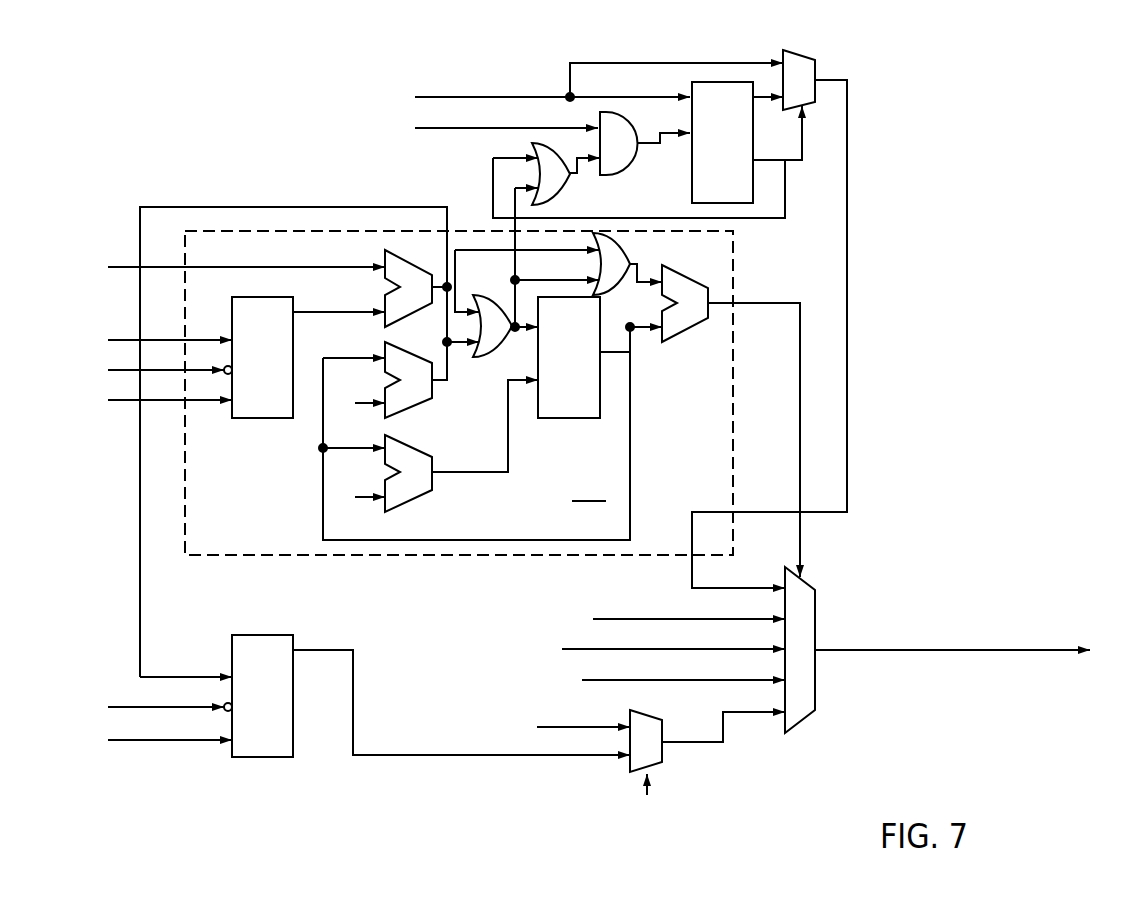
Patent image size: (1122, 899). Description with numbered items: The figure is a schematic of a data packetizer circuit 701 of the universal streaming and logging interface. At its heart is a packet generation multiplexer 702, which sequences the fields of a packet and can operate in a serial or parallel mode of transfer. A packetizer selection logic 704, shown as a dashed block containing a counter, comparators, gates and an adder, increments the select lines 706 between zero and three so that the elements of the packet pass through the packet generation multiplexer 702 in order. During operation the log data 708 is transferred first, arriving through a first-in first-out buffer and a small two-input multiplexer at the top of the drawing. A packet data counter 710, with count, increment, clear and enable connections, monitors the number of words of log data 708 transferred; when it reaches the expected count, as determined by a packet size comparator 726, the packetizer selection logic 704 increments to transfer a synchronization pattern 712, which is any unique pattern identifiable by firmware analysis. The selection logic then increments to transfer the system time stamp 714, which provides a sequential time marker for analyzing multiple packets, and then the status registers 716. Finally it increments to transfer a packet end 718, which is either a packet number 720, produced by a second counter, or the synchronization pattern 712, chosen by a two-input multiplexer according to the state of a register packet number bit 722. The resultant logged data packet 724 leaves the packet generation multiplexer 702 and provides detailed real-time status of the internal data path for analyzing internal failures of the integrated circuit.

The data packetizer circuit 701 is at (140, 74).
The packet generation multiplexer 702 is at (807, 693).
The packetizer selection logic 704 is at (459, 367).
The select lines 706 is at (802, 518).
The log data 708 is at (847, 240).
The packet data counter 710 is at (263, 420).
The synchronization pattern 712 is at (593, 618).
The system time stamp 714 is at (587, 649).
The status registers 716 is at (592, 680).
The packet end 718 is at (740, 714).
The packet number 720 is at (508, 758).
The register packet number bit 722 is at (647, 790).
The logged data packet 724 is at (912, 651).
The packet size comparator 726 is at (412, 278).